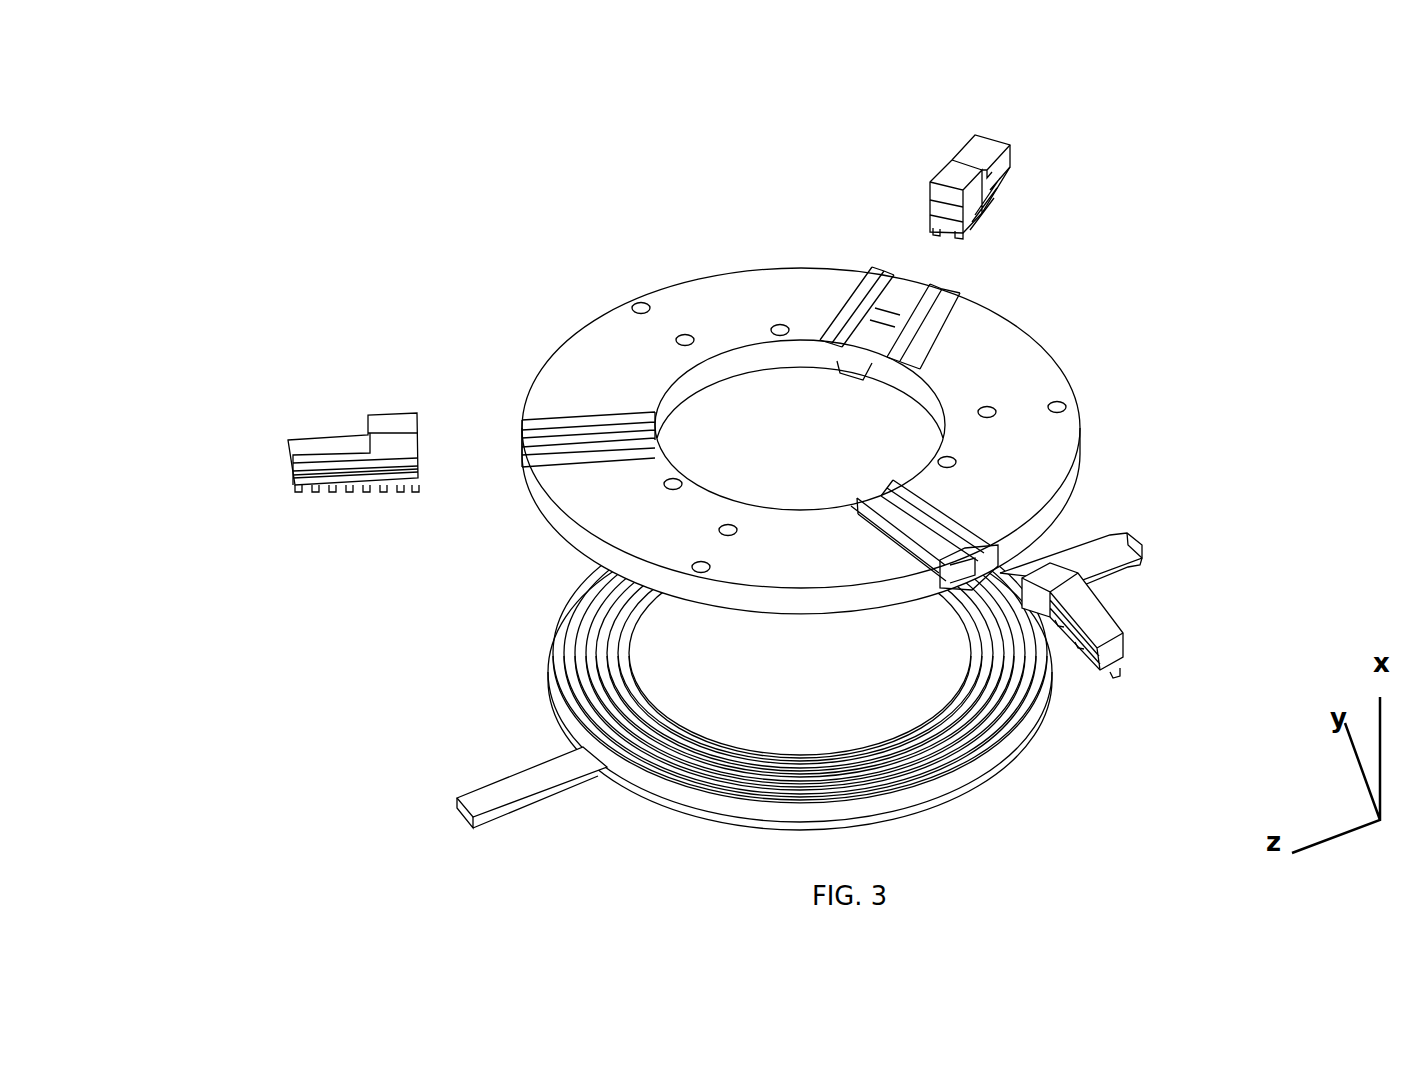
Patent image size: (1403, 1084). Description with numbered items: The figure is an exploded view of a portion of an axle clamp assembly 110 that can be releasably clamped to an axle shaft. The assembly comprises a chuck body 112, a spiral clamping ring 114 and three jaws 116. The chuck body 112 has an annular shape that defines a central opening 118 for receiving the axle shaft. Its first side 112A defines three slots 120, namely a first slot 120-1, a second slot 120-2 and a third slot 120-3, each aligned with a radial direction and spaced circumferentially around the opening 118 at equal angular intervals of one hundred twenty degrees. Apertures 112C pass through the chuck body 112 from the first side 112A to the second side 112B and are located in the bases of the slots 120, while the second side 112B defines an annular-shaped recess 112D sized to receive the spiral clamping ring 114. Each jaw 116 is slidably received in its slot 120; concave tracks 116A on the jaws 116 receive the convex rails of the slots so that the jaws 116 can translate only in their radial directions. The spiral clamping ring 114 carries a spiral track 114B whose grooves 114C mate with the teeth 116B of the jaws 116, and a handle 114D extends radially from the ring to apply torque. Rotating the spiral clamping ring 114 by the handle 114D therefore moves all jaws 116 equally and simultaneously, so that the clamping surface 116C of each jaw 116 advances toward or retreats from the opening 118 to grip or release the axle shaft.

The axle clamp assembly 110 is at (435, 302).
The chuck body 112 is at (794, 352).
The first side of chuck body 112A is at (622, 530).
The second side of chuck body 112B is at (578, 553).
The apertures 112C is at (867, 328).
The annular-shaped recess 112D is at (780, 325).
The spiral clamping ring 114 is at (767, 678).
The spiral track 114B is at (1000, 718).
The grooves 114C is at (875, 783).
The handle 114D is at (508, 788).
The jaws 116 is at (709, 406).
The concave tracks 116A is at (365, 473).
The teeth 116B is at (327, 490).
The clamping surface 116C is at (945, 207).
The opening 118 is at (807, 403).
The slots 120 is at (803, 340).
The first slot 120-1 is at (557, 447).
The second slot 120-2 is at (906, 288).
The third slot 120-3 is at (963, 522).